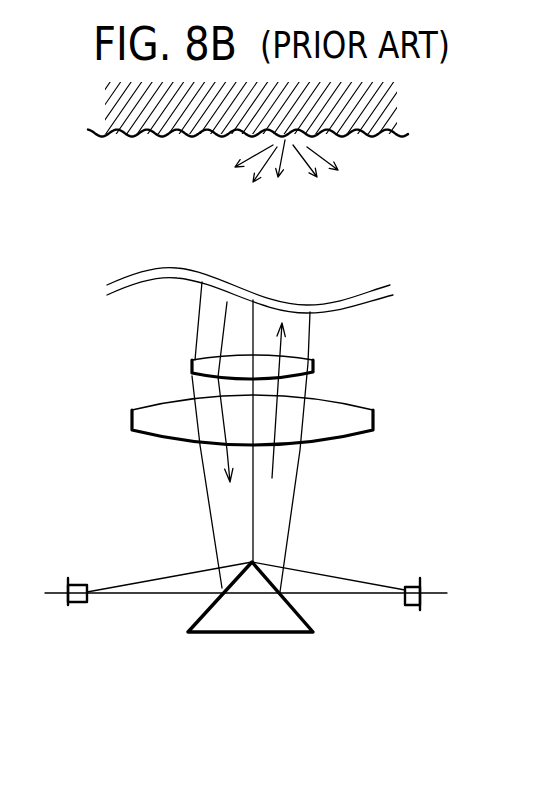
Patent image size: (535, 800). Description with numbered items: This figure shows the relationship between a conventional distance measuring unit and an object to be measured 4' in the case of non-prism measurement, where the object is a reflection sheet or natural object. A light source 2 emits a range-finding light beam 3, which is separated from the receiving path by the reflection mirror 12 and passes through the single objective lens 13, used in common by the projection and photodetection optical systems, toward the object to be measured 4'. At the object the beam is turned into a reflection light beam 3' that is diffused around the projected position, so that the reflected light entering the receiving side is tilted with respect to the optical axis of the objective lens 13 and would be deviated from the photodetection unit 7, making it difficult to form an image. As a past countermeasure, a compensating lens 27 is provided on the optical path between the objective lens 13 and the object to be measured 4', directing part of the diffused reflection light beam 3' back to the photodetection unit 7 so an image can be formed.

The object to be measured 4' is at (264, 131).
The compensating lens 27 is at (313, 363).
The objective lens 13 is at (373, 415).
The reflection light beam 3' is at (177, 435).
The range-finding light beam 3 is at (321, 452).
The photodetection unit 7 is at (72, 578).
The light source 2 is at (412, 587).
The reflection mirror 12 is at (247, 633).